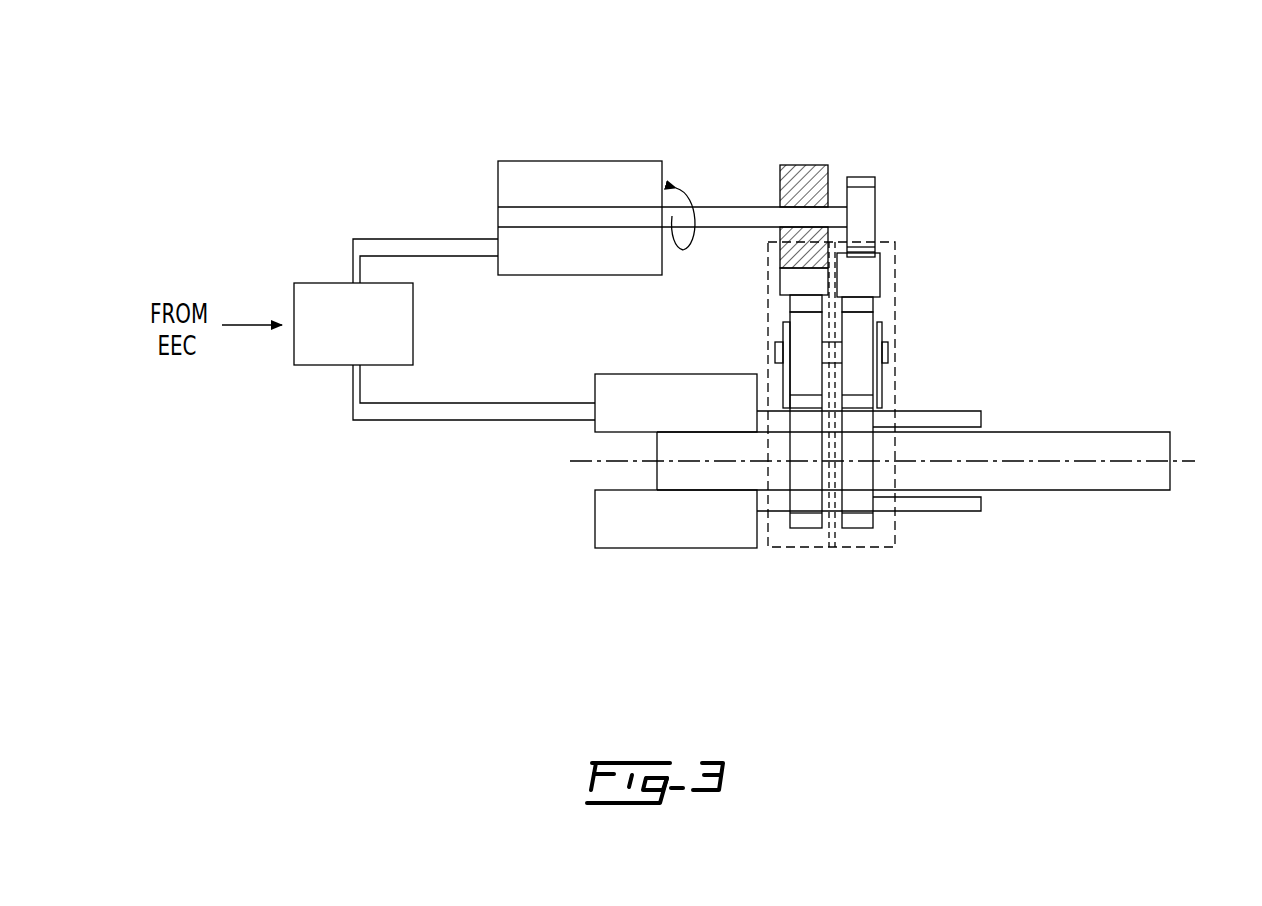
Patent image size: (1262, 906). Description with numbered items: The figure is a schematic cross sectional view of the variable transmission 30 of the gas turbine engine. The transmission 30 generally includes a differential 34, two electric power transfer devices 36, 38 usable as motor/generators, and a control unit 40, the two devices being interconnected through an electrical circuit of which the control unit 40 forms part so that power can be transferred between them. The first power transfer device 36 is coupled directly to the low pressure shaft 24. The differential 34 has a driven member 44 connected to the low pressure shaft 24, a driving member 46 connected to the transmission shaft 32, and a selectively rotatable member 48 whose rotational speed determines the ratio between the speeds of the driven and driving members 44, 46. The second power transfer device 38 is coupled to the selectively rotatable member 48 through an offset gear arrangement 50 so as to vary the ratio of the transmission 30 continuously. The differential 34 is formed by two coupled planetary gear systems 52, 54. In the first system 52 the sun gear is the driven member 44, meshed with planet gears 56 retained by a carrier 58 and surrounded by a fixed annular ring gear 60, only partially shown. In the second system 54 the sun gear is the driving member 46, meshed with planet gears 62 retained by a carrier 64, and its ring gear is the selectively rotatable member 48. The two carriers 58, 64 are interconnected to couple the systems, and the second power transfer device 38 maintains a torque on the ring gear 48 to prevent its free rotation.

The low pressure shaft 24 is at (990, 478).
The variable transmission 30 is at (722, 172).
The transmission shaft 32 is at (958, 418).
The differential 34 is at (930, 352).
The first power transfer device 36 is at (617, 542).
The second power transfer device 38 is at (513, 172).
The control unit 40 is at (310, 366).
The driven member 44 is at (797, 505).
The driving member 46 is at (868, 508).
The selectively rotatable member 48 is at (880, 258).
The offset gear arrangement 50 is at (887, 212).
The first planetary gear system 52 is at (766, 256).
The second planetary gear system 54 is at (862, 548).
The planet gears 56 is at (792, 318).
The carrier 58 is at (790, 388).
The annular ring gear 60 is at (780, 282).
The planet gears 62 is at (875, 378).
The carrier 64 is at (880, 323).